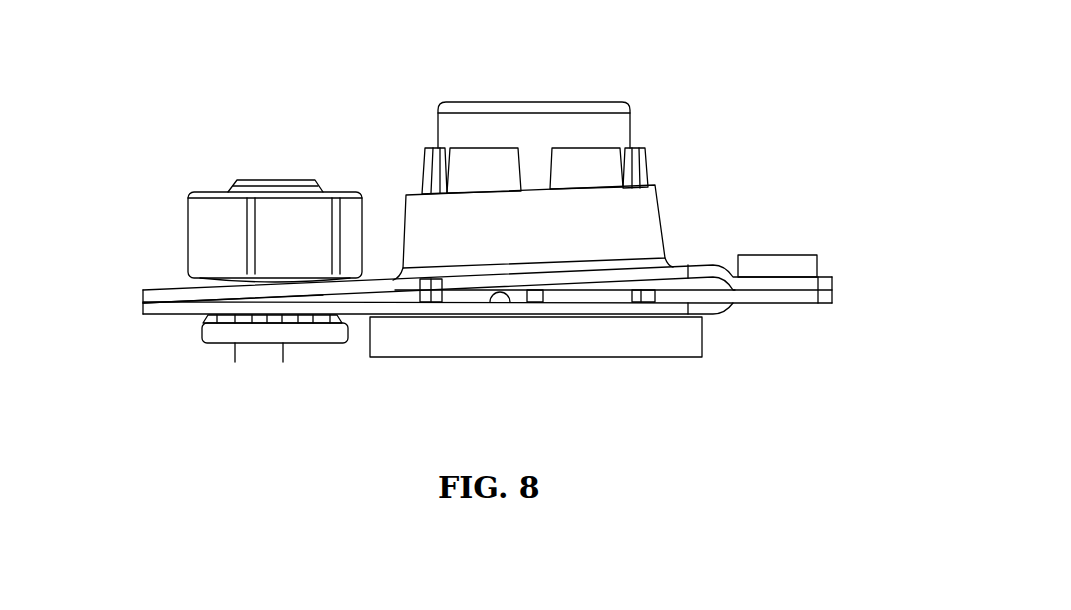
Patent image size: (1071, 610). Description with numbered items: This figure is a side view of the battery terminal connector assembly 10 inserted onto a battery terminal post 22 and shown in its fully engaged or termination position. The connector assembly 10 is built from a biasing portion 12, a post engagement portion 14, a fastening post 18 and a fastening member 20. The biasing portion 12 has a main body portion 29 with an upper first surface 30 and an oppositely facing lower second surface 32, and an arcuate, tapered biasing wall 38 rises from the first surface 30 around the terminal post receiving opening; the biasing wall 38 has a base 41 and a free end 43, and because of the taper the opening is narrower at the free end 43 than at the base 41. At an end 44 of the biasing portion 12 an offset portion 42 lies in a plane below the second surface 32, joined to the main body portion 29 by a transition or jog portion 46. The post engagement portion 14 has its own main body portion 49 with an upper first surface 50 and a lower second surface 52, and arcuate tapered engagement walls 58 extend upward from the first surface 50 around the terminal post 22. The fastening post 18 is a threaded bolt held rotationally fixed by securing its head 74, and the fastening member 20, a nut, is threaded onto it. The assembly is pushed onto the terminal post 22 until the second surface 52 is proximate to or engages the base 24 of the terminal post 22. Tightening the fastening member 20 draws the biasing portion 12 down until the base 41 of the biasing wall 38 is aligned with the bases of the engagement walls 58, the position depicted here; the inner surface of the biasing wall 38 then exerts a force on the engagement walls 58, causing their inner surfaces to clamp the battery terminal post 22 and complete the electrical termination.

The battery terminal connector assembly 10 is at (730, 72).
The biasing portion 12 is at (152, 232).
The post engagement portion 14 is at (182, 354).
The fastening post 18 is at (283, 343).
The fastening member 20 is at (208, 192).
The terminal post 22 is at (556, 103).
The base of the terminal post 24 is at (643, 335).
The main body portion 29 is at (393, 280).
The first surface 30 is at (160, 289).
The second surface 32 is at (178, 303).
The biasing wall 38 is at (655, 196).
The base of the biasing wall 41 is at (657, 258).
The offset portion 42 is at (808, 280).
The free end of the biasing wall 43 is at (643, 168).
The end of the biasing portion 44 is at (832, 292).
The transition portion 46 is at (728, 262).
The main body portion 49 is at (358, 318).
The first surface 50 is at (490, 305).
The second surface 52 is at (409, 318).
The engagement walls 58 is at (492, 160).
The head 74 is at (235, 343).